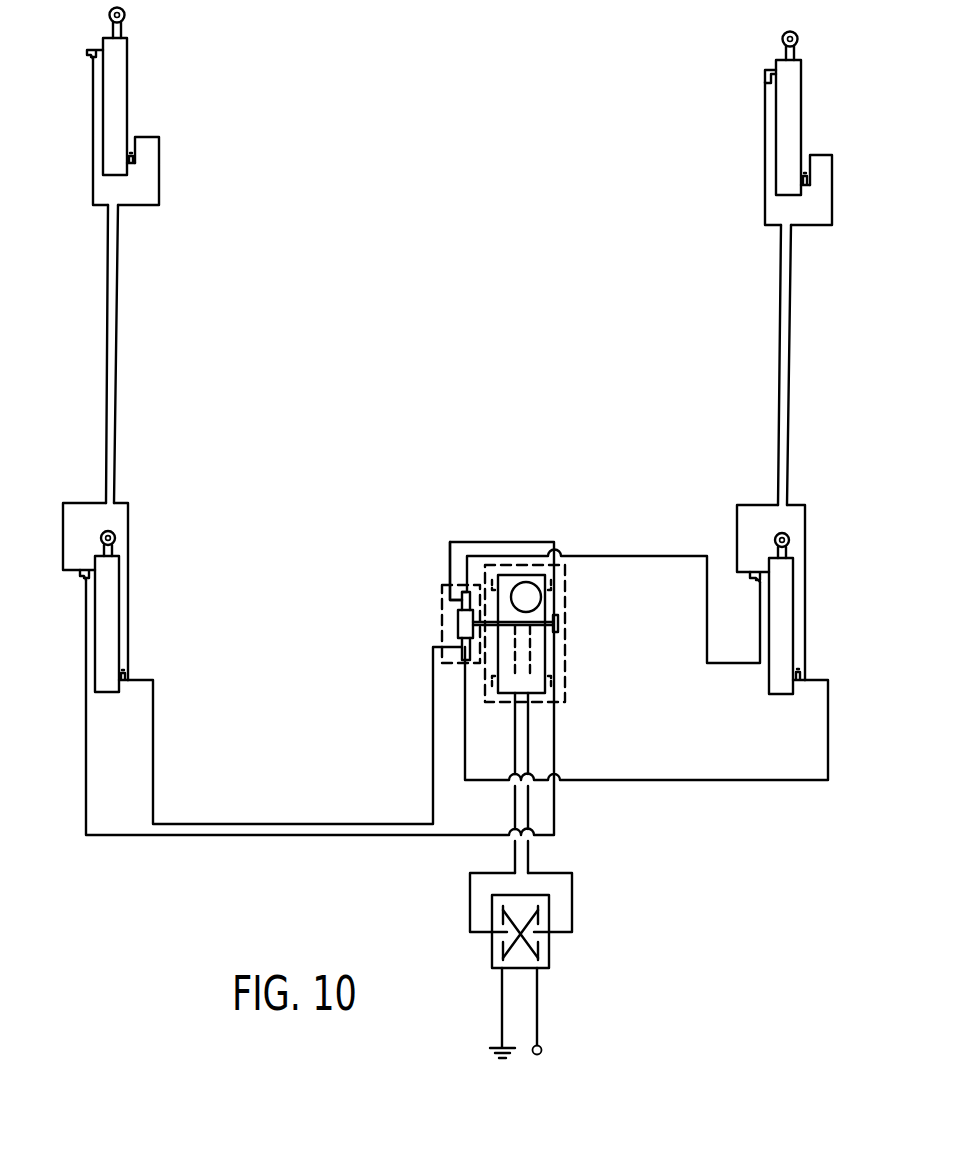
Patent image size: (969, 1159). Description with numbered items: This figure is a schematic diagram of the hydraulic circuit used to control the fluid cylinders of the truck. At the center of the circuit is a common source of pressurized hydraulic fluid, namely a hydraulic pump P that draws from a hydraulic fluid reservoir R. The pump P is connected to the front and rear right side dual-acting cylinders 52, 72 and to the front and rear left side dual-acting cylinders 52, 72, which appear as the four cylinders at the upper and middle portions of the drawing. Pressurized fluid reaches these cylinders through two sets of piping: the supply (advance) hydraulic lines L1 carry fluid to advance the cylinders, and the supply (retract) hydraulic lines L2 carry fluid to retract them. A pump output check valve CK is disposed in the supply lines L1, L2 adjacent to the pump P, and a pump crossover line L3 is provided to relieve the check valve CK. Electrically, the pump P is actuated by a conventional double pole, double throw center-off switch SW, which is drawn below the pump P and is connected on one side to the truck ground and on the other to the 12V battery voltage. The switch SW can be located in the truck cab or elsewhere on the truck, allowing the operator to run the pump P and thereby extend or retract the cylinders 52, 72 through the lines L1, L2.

The hydraulic cylinder 72 is at (117, 85).
The hydraulic cylinder 52 is at (106, 634).
The supply (advance) hydraulic line L1 is at (93, 163).
The supply (retract) hydraulic line L2 is at (159, 164).
The pump crossover line L3 is at (450, 545).
The pump output check valve CK is at (458, 623).
The hydraulic pump P is at (525, 645).
The hydraulic fluid reservoir R is at (527, 597).
The switch SW is at (553, 947).
The battery voltage 12V is at (584, 1043).